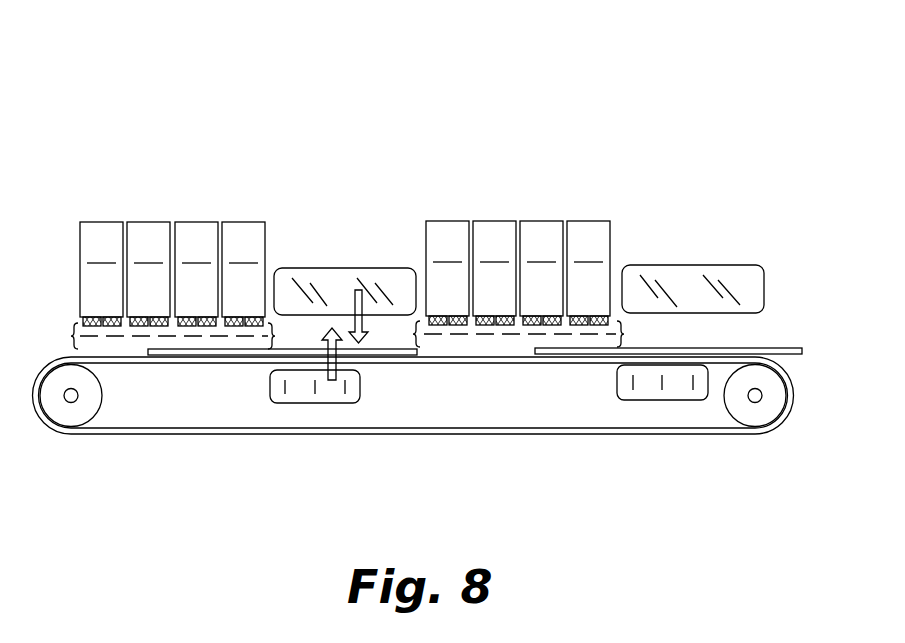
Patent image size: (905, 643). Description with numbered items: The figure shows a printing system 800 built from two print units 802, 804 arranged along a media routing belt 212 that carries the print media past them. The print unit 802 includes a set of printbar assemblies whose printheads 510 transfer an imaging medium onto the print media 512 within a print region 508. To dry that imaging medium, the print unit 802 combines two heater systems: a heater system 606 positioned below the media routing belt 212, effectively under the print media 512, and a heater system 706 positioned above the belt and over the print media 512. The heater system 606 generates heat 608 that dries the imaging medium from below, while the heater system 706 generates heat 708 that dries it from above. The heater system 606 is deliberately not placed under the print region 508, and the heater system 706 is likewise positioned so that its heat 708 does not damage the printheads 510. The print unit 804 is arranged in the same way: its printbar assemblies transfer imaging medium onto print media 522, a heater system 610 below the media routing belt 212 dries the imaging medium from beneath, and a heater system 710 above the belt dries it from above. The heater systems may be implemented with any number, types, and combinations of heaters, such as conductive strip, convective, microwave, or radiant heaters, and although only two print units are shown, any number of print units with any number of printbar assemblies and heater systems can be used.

The printing system 800 is at (468, 118).
The print unit 802 is at (208, 195).
The print unit 804 is at (557, 192).
The heater system 706 is at (315, 268).
The heater system 710 is at (665, 265).
The heat 708 is at (363, 300).
The heat 608 is at (330, 382).
The heater system 606 is at (303, 403).
The heater system 610 is at (648, 400).
The print media 512 is at (163, 358).
The print media 522 is at (613, 353).
The print region 508 is at (124, 346).
The printheads 510 is at (474, 341).
The media routing belt 212 is at (75, 437).